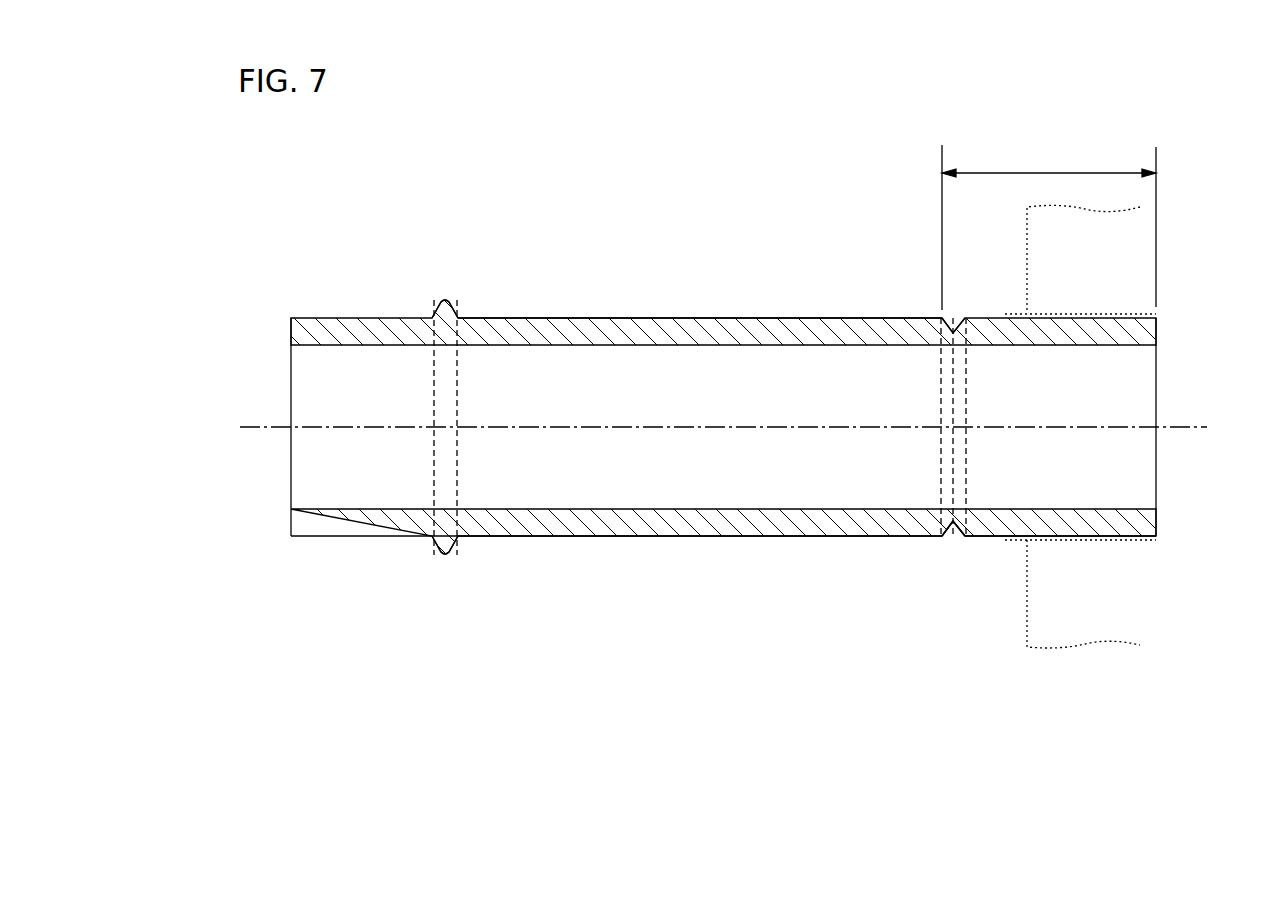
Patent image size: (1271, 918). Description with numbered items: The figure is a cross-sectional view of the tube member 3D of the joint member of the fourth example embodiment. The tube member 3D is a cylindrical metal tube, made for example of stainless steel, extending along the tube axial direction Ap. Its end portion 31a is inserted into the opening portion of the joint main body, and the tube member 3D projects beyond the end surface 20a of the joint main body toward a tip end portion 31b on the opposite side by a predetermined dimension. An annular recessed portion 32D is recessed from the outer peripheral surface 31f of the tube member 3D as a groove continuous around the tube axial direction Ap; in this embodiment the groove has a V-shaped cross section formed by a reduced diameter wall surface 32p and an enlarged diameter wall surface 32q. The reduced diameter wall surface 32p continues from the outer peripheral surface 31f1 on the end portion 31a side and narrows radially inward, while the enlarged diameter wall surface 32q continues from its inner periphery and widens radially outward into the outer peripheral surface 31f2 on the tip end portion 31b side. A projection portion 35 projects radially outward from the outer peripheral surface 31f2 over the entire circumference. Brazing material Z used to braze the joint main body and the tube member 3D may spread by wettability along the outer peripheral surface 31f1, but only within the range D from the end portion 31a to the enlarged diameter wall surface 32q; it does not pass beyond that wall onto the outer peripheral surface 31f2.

The tube member 3D is at (688, 312).
The projection portion 35 is at (445, 300).
The annular recessed portion 32D is at (957, 326).
The enlarged diameter wall surface 32q is at (946, 538).
The reduced diameter wall surface 32p is at (955, 537).
The outer peripheral surface 31f is at (831, 318).
The outer peripheral surface 31f1 is at (1037, 537).
The outer peripheral surface 31f2 is at (680, 540).
The end portion 31a is at (1130, 537).
The tip end portion 31b is at (292, 536).
The brazing material Z is at (1118, 314).
The end surface 20a is at (1027, 613).
The tube axial direction Ap is at (1190, 428).
The range D is at (1049, 221).